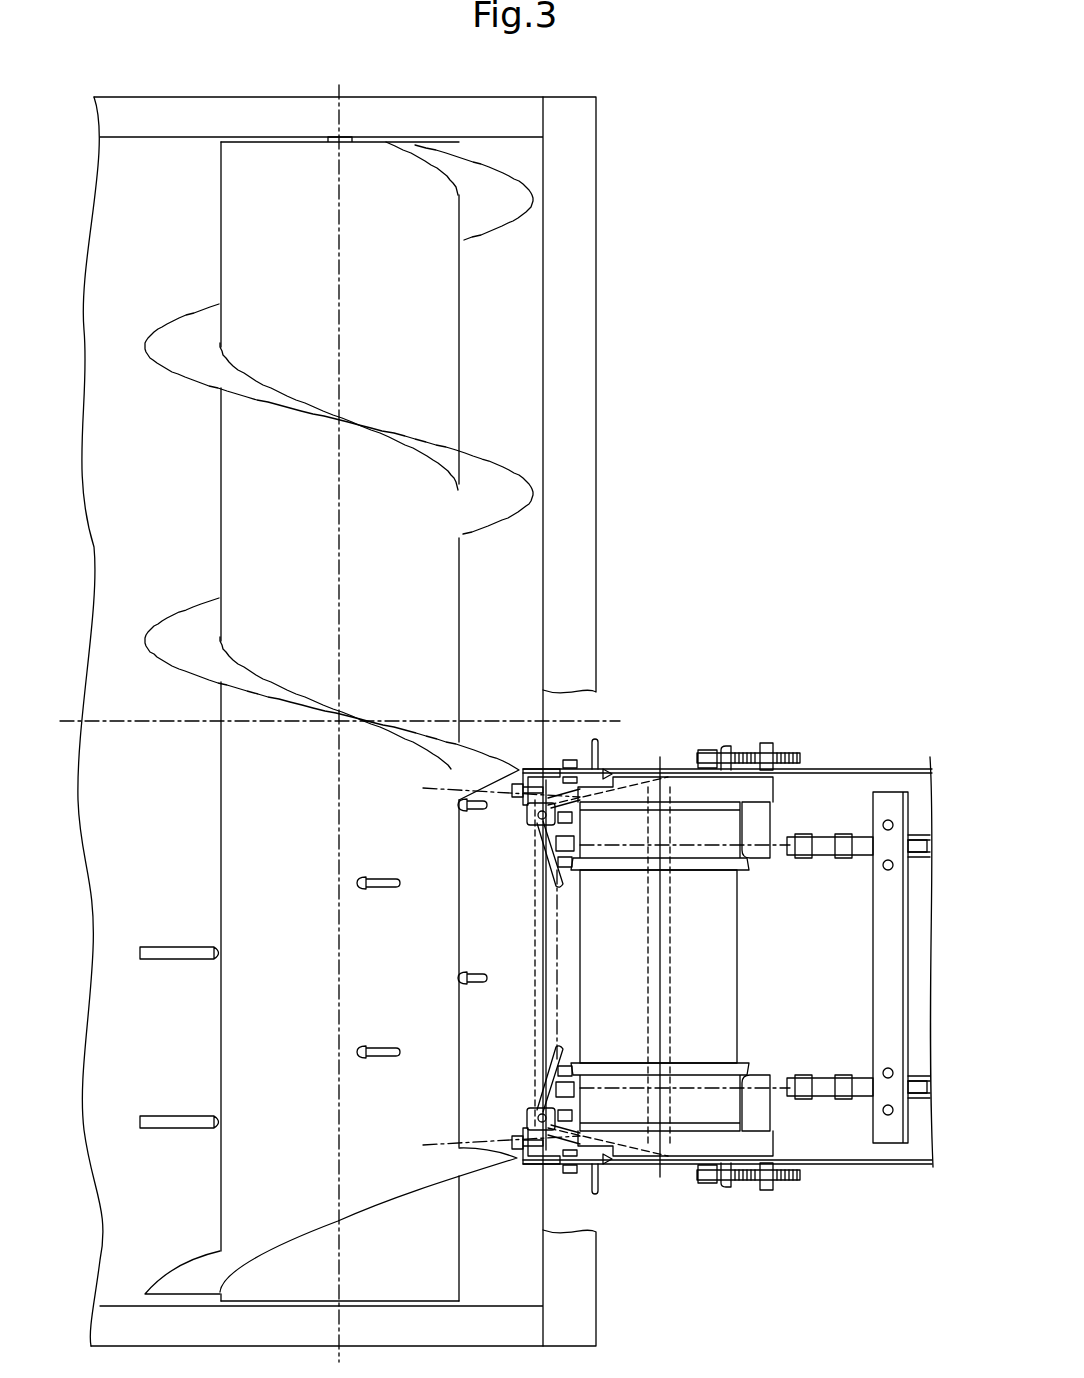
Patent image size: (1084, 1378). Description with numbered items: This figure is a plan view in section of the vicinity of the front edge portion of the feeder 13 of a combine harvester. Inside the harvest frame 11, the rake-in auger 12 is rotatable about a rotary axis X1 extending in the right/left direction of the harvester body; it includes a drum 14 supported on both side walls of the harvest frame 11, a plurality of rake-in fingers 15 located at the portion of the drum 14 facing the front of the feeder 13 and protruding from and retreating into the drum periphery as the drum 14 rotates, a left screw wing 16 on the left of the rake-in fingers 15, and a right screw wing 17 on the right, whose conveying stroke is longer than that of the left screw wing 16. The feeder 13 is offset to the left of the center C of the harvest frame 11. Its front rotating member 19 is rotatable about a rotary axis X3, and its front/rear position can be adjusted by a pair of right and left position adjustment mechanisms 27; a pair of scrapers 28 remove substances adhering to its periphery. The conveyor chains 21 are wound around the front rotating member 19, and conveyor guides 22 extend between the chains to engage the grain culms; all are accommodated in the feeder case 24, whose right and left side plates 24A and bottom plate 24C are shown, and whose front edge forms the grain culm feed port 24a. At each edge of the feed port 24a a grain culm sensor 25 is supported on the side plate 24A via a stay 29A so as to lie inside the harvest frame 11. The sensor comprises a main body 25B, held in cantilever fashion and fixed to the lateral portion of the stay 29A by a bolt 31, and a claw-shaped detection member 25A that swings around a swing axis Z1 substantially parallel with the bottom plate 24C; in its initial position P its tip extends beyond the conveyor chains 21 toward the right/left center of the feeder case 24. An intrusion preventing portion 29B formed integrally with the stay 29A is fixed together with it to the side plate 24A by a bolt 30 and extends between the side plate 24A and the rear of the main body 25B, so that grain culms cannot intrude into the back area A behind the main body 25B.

The harvest frame 11 is at (518, 374).
The rake-in auger 12 is at (217, 247).
The feeder 13 is at (680, 765).
The drum 14 is at (222, 275).
The rake-in fingers 15 is at (183, 1116).
The left screw wing 16 is at (187, 1277).
The right screw wing 17 is at (152, 345).
The front rotating member 19 is at (716, 1000).
The conveyor chains 21 is at (825, 858).
The conveyor guides 22 is at (532, 957).
The feeder case 24 is at (845, 769).
The side plates 24A is at (808, 768).
The bottom plate 24C is at (862, 810).
The grain culm feed port 24a is at (542, 982).
The grain culm sensor 25 is at (535, 840).
The detection member 25A is at (552, 876).
The main body 25B is at (527, 812).
The position adjustment mechanisms 27 is at (741, 750).
The scrapers 28 is at (760, 811).
The stay 29A is at (533, 771).
The intrusion preventing portion 29B is at (581, 830).
The bolt 30 is at (572, 765).
The bolt 31 is at (522, 797).
The rotary axis X1 is at (339, 710).
The rotary axis X3 is at (662, 983).
The swing axis Z1 is at (486, 969).
The initial position P is at (558, 892).
The center C is at (606, 950).
The back area A is at (608, 778).